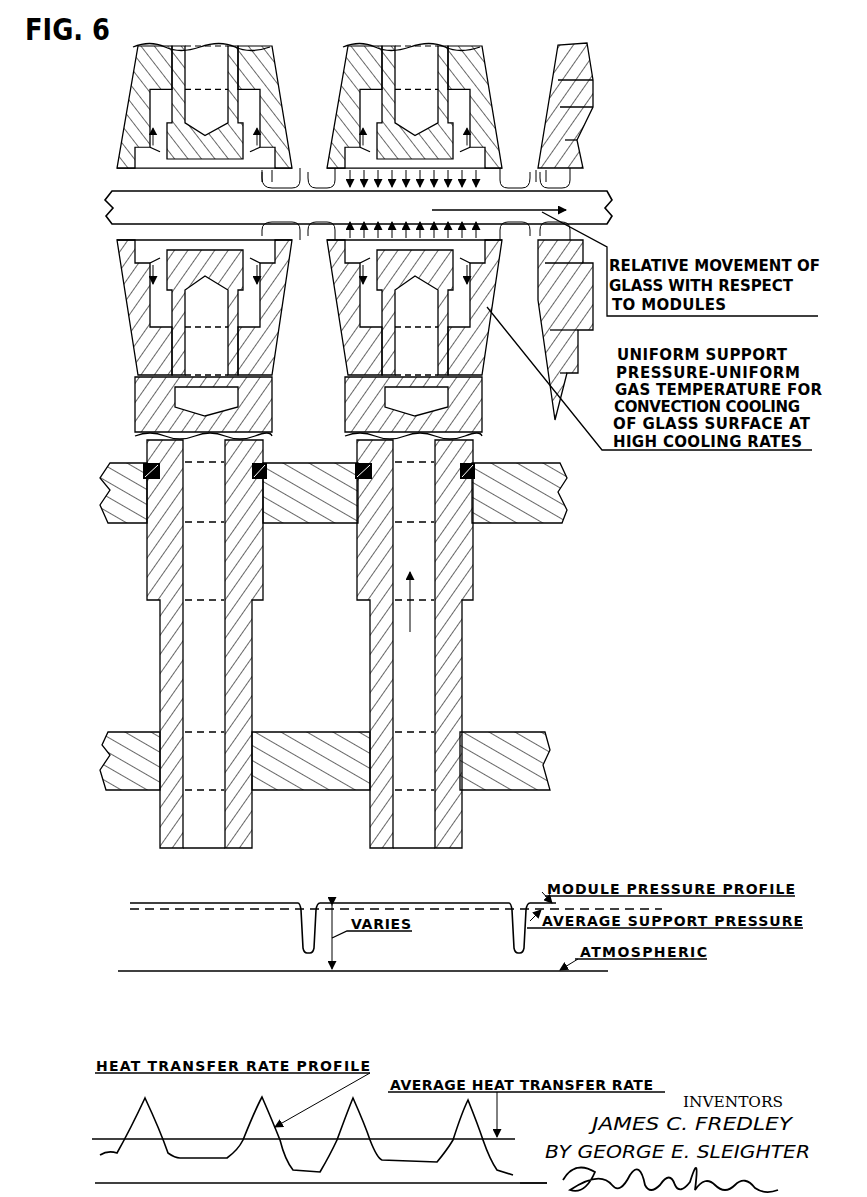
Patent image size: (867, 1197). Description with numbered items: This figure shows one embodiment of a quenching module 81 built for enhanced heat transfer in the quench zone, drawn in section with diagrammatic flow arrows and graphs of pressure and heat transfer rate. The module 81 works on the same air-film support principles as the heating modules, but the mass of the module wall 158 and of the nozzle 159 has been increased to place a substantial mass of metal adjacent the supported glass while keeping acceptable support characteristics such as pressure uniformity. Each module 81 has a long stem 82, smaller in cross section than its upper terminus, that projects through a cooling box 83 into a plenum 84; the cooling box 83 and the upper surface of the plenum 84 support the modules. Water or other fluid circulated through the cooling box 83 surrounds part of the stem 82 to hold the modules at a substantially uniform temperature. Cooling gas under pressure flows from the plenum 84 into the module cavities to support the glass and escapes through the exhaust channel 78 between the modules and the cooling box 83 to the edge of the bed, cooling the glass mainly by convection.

The module wall 158 is at (85, 1196).
The nozzle 159 is at (153, 286).
The module 81 is at (130, 355).
The exhaust channel 78 is at (398, 339).
The module stem 82 is at (160, 630).
The cooling box 83 is at (382, 644).
The plenum 84 is at (325, 781).